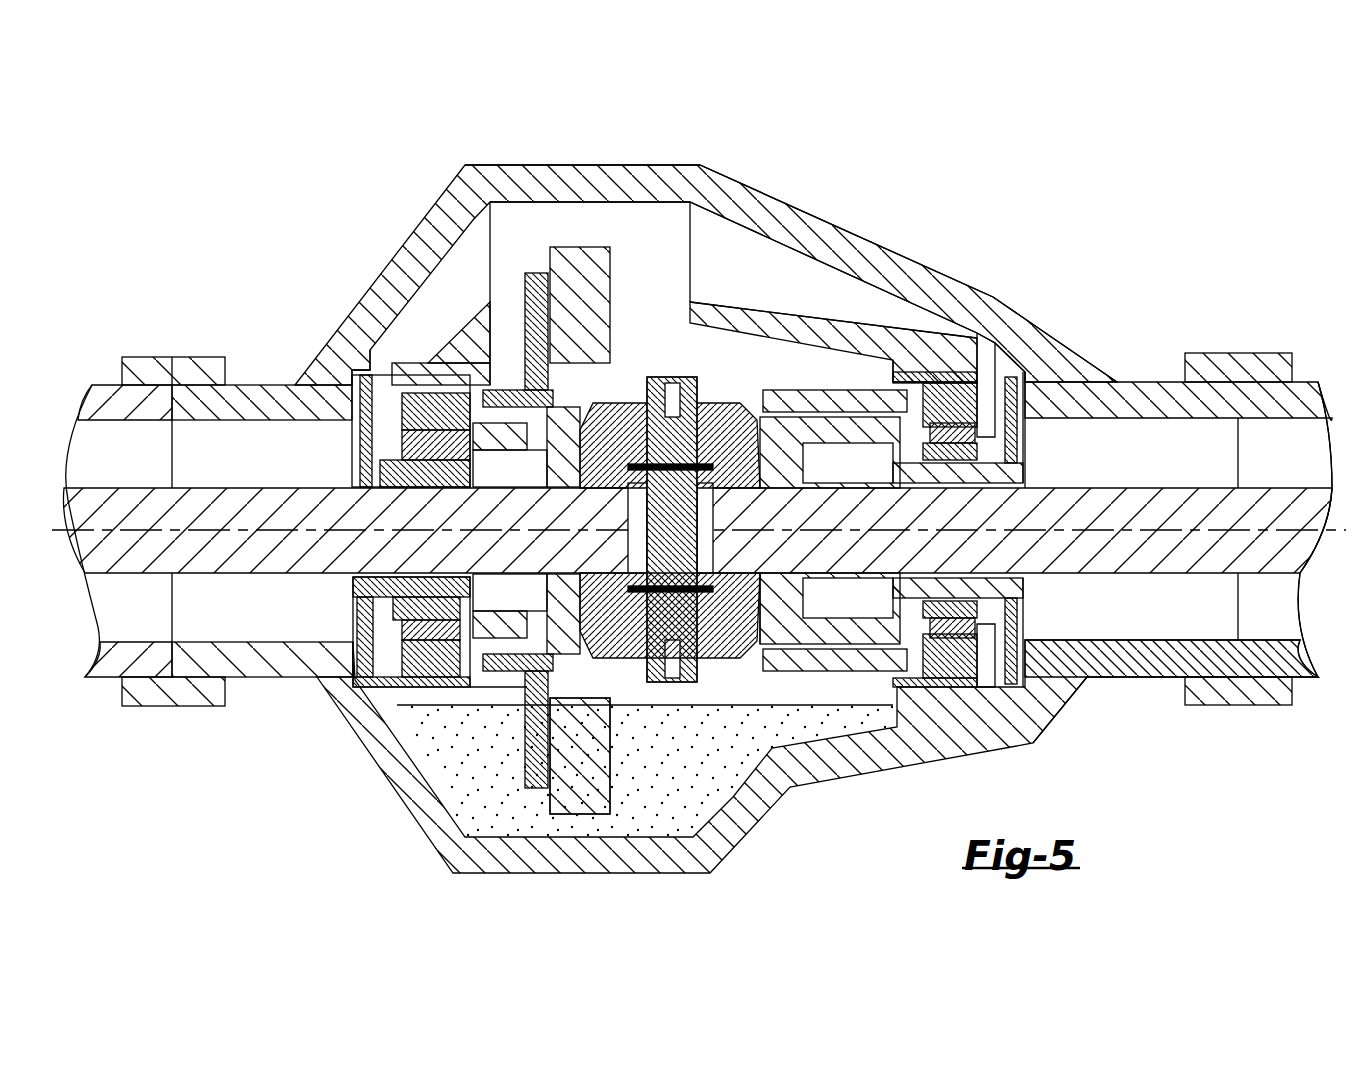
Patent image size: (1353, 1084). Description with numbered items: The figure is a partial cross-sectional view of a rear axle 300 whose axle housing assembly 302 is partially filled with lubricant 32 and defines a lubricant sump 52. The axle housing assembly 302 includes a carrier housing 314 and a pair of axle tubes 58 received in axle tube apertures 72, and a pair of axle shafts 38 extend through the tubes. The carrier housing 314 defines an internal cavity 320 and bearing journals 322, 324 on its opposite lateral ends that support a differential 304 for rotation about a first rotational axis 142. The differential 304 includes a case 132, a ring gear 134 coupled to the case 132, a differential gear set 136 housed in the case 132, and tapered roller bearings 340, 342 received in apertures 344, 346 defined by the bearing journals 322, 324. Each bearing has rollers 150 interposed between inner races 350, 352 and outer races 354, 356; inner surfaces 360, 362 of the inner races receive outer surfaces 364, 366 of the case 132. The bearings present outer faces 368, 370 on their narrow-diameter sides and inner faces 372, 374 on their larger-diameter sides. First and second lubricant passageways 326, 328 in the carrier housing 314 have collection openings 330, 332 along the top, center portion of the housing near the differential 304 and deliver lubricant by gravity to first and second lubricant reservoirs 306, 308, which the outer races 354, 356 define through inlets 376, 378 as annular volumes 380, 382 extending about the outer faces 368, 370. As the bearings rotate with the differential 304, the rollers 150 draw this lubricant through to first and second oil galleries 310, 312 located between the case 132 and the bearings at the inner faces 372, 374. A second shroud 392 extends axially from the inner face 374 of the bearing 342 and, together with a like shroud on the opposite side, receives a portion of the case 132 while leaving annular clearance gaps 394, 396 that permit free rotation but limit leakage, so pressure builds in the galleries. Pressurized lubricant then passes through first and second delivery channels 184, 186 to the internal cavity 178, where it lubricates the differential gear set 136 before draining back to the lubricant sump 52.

The lubricant 32 is at (460, 798).
The axle shafts 38 is at (90, 486).
The lubricant sump 52 is at (505, 836).
The axle tubes 58 is at (106, 384).
The axle tube apertures 72 is at (160, 385).
The case 132 is at (766, 678).
The ring gear 134 is at (621, 797).
The differential gear set 136 is at (700, 666).
The first rotational axis 142 is at (1322, 566).
The rollers 150 is at (1003, 426).
The internal cavity 178 is at (757, 393).
The first delivery channel 184 is at (858, 426).
The second delivery channel 186 is at (537, 418).
The rear axle 300 is at (805, 158).
The axle housing assembly 302 is at (1135, 368).
The differential 304 is at (646, 288).
The first lubricant reservoir 306 is at (1026, 382).
The second lubricant reservoir 308 is at (349, 690).
The first oil gallery 310 is at (902, 410).
The second oil gallery 312 is at (455, 690).
The carrier housing 314 is at (746, 186).
The internal cavity 320 is at (595, 212).
The bearing journal 322 is at (905, 342).
The bearing journal 324 is at (422, 352).
The first lubricant passageway 326 is at (782, 256).
The second lubricant passageway 328 is at (488, 246).
The collection opening 330 is at (679, 243).
The collection opening 332 is at (494, 240).
The tapered roller bearing 340 is at (954, 362).
The tapered roller bearing 342 is at (403, 394).
The aperture 344 is at (1027, 748).
The aperture 346 is at (393, 692).
The inner race 350 is at (1003, 451).
The inner race 352 is at (380, 470).
The outer race 354 is at (1012, 405).
The outer race 356 is at (397, 420).
The inner surface 360 is at (945, 485).
The inner surface 362 is at (420, 488).
The outer surface 364 is at (957, 613).
The outer surface 366 is at (388, 615).
The outer face 368 is at (996, 662).
The outer face 370 is at (378, 622).
The inner face 372 is at (910, 632).
The inner face 374 is at (468, 638).
The inlet 376 is at (1005, 397).
The inlet 378 is at (368, 372).
The annular volume 380 is at (987, 646).
The annular volume 382 is at (383, 440).
The second shroud 392 is at (470, 689).
The annular clearance gap 394 is at (893, 673).
The annular clearance gap 396 is at (500, 679).